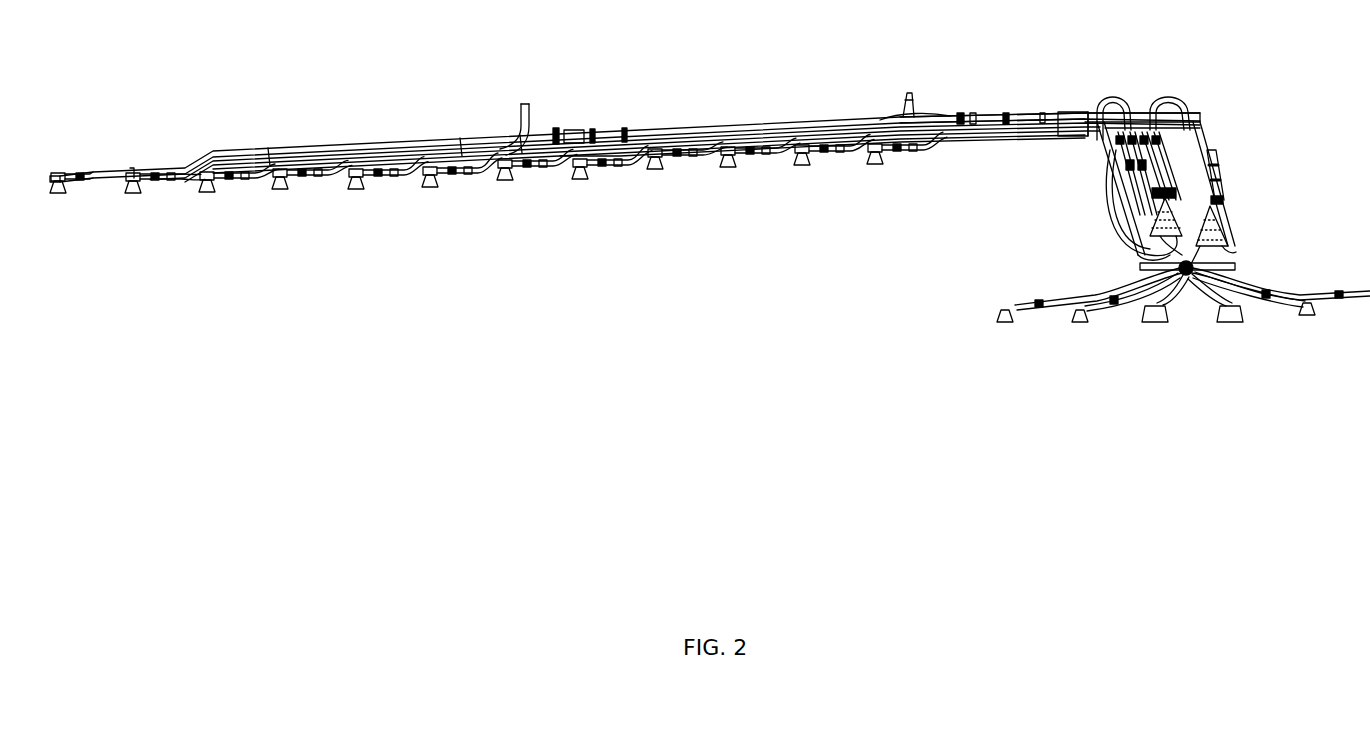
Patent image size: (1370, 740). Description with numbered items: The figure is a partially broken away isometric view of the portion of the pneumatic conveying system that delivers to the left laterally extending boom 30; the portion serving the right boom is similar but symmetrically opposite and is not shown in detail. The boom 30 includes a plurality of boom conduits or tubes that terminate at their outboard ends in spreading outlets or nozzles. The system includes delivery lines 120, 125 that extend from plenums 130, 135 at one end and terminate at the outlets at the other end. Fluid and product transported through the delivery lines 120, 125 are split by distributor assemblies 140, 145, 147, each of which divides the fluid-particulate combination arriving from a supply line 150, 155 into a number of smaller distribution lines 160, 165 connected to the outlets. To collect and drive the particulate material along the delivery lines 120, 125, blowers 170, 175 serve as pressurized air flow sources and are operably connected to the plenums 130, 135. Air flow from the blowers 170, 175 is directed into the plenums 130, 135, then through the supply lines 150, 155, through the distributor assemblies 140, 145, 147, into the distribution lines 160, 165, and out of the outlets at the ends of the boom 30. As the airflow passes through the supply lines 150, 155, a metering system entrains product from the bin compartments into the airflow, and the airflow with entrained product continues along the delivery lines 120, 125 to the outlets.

The left laterally extending boom 30 is at (691, 119).
The delivery line 120 is at (1005, 109).
The delivery line 125 is at (985, 145).
The plenum 130 is at (1226, 218).
The plenum 135 is at (1150, 236).
The distributor assembly 140 is at (961, 109).
The distributor assembly 145 is at (577, 131).
The distributor assembly 147 is at (1230, 274).
The supply line 150 is at (1078, 117).
The supply line 155 is at (1069, 130).
The distribution line 160 is at (915, 92).
The distribution line 165 is at (529, 117).
The blower 170 is at (1220, 170).
The blower 175 is at (1150, 203).